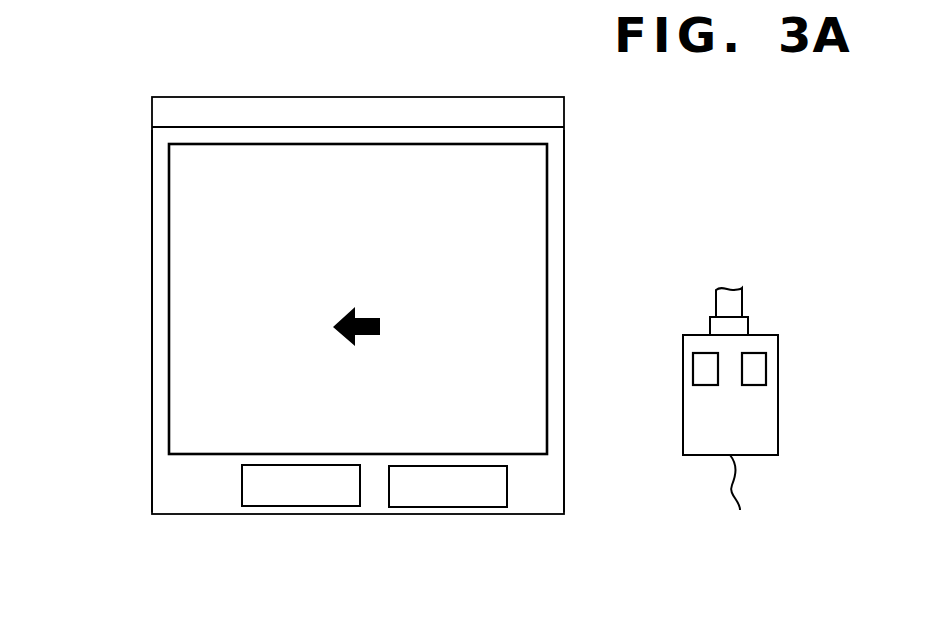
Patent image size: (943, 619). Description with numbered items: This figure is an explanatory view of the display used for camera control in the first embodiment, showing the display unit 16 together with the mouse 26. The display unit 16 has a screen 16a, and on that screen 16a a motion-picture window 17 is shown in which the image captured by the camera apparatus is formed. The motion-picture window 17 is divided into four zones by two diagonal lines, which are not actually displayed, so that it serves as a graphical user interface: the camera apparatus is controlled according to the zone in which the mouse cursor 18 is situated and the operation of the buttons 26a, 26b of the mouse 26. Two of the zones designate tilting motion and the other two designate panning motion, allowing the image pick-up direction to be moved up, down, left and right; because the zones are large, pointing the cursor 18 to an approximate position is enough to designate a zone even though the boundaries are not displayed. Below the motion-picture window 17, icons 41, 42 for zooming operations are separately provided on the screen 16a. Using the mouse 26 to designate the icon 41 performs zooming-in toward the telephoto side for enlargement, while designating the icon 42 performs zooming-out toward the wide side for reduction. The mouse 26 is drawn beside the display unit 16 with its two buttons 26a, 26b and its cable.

The display unit 16 is at (122, 322).
The screen 16a is at (555, 146).
The motion-picture window 17 is at (517, 206).
The mouse cursor 18 is at (379, 318).
The icon 41 is at (315, 507).
The icon 42 is at (450, 508).
The mouse 26 is at (758, 437).
The button 26a is at (700, 377).
The button 26b is at (754, 367).